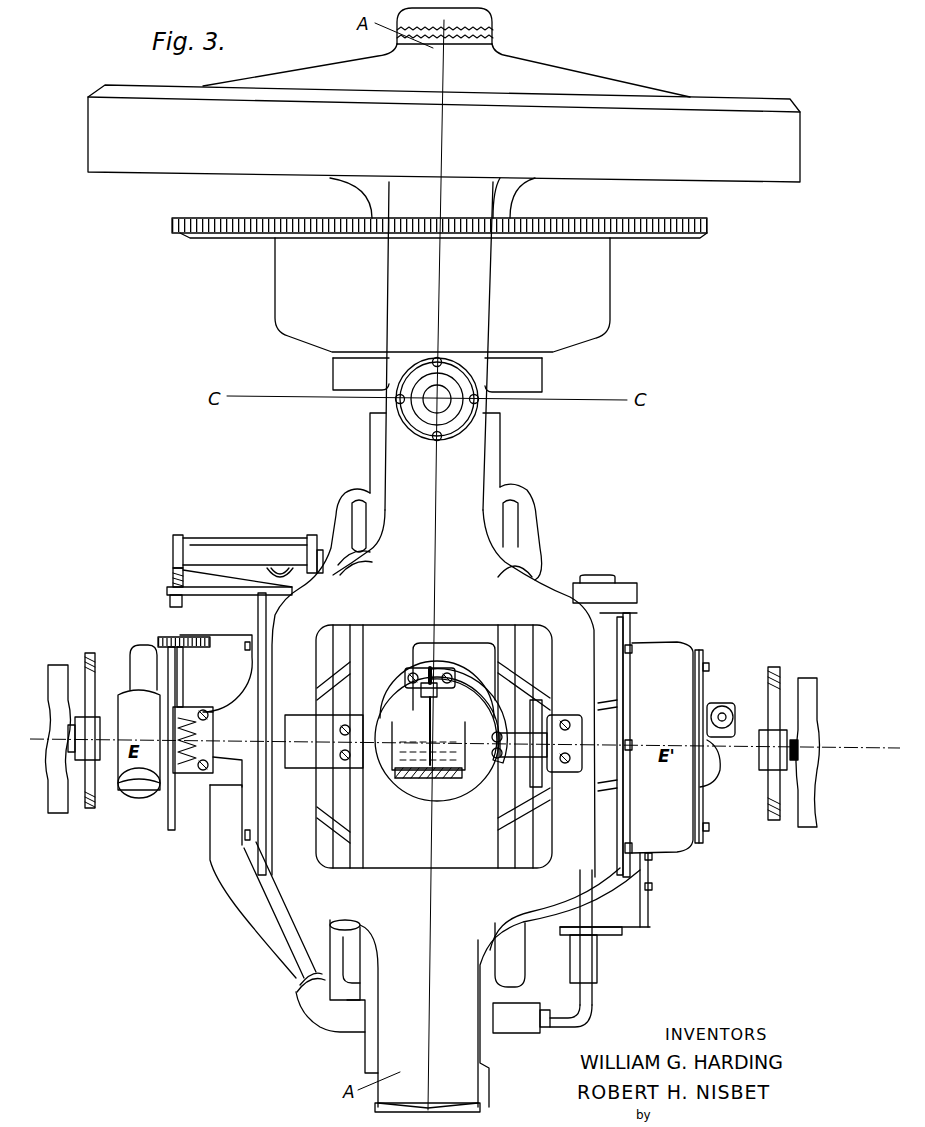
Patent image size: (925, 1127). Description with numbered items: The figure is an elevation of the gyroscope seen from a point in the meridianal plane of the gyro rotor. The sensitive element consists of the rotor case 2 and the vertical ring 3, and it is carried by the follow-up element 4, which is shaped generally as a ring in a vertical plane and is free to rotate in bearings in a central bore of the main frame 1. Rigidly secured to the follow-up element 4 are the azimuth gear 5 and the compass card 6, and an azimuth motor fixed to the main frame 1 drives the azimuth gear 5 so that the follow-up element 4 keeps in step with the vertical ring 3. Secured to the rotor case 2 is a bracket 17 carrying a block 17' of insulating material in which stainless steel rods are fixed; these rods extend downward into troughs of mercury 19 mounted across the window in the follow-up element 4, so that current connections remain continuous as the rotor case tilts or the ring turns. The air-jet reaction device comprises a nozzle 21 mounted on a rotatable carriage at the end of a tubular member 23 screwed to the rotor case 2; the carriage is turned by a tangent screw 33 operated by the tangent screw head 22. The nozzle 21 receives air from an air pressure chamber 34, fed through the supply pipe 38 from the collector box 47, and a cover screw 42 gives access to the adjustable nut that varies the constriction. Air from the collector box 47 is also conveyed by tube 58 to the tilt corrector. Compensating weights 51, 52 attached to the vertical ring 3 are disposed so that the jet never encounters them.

The main frame 1 is at (403, 276).
The rotor case 2 is at (610, 660).
The vertical ring 3 is at (493, 442).
The follow-up element 4 is at (470, 487).
The azimuth gear 5 is at (172, 226).
The compass card 6 is at (518, 77).
The bracket 17 is at (526, 665).
The block of insulating material 17' is at (502, 642).
The troughs of mercury 19 is at (418, 762).
The nozzle 21 is at (140, 665).
The tangent screw head 22 is at (180, 637).
The tubular member 23 is at (225, 762).
The tangent screw 33 is at (167, 782).
The air pressure chamber 34 is at (87, 665).
The supply pipe 38 is at (300, 968).
The cover screw 42 is at (133, 792).
The collector box 47 is at (503, 1022).
The compensating weight 51 is at (57, 810).
The compensating weight 52 is at (808, 705).
The tube 58 is at (580, 1013).